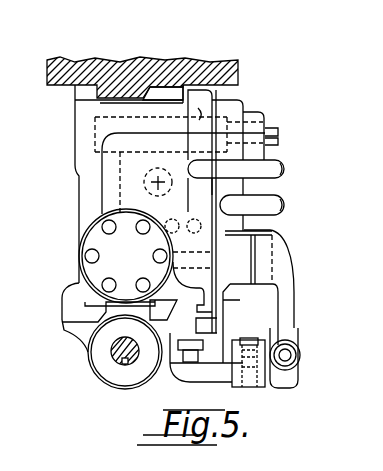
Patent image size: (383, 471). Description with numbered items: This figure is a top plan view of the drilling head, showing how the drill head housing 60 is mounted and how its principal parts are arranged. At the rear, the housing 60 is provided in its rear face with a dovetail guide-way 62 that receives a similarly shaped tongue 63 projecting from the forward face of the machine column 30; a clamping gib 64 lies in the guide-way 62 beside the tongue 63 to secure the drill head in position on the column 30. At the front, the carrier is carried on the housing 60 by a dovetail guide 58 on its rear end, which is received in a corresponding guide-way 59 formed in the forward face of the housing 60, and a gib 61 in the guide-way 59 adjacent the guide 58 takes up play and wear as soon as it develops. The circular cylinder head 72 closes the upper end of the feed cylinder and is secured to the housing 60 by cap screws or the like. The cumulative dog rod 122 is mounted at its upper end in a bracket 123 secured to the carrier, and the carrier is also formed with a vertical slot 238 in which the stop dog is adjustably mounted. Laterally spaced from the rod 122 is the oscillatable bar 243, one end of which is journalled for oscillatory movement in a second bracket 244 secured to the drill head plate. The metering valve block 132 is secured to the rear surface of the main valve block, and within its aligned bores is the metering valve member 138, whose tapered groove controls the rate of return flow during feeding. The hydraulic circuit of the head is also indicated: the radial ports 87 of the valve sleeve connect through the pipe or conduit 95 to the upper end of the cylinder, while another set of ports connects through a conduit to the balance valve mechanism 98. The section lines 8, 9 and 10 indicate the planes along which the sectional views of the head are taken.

The machine column 30 is at (208, 63).
The tongue 63 is at (117, 90).
The clamping gib 64 is at (168, 90).
The dovetail guide-way 62 is at (75, 105).
The drill head housing 60 is at (78, 155).
The block 132 is at (187, 110).
The radial ports 87 is at (120, 190).
The pipe or conduit 95 is at (273, 158).
The balance valve mechanism 98 is at (264, 200).
The metering valve member 138 is at (270, 130).
The section line 10- 10 is at (112, 134).
The section line 8- 8 is at (158, 181).
The section line 9- 9 is at (106, 217).
The cylinder head 72 is at (100, 246).
The guide-way 59 is at (85, 298).
The gib 61 is at (163, 314).
The dovetail guide 58 is at (63, 333).
The slot 238 is at (166, 366).
The bracket 123 is at (231, 377).
The rod 122 is at (252, 340).
The second bracket 244 is at (284, 278).
The oscillatable bar 243 is at (300, 354).